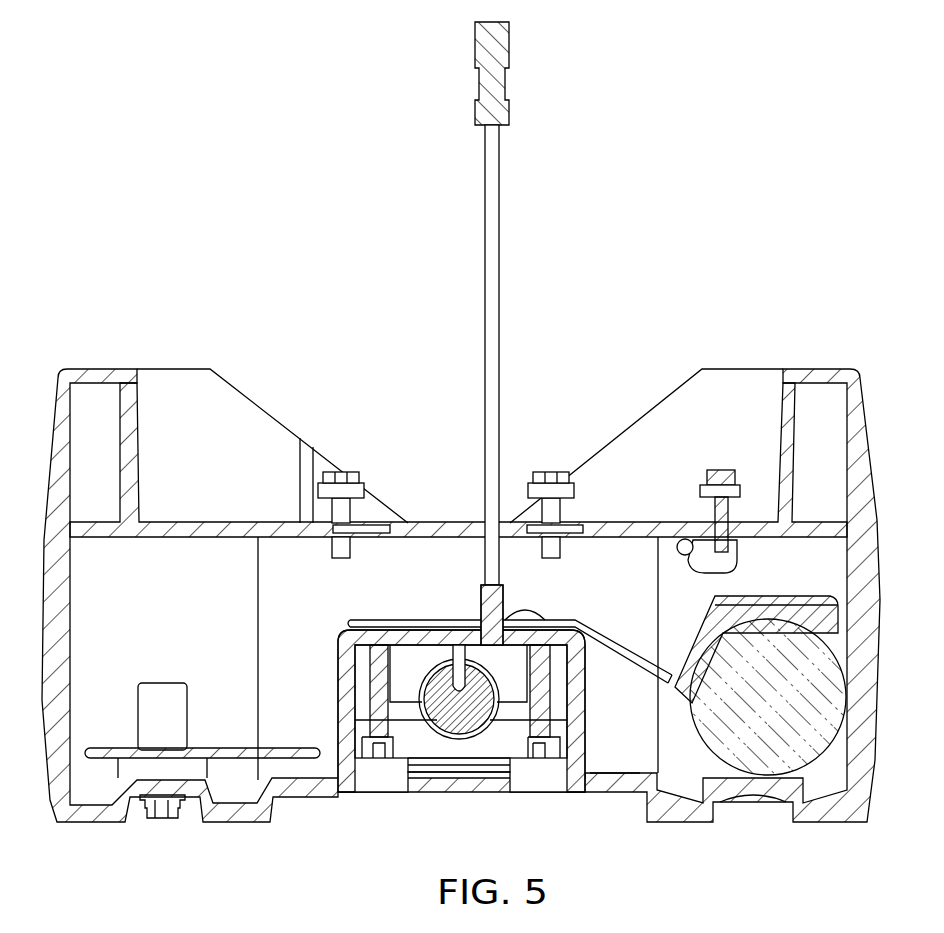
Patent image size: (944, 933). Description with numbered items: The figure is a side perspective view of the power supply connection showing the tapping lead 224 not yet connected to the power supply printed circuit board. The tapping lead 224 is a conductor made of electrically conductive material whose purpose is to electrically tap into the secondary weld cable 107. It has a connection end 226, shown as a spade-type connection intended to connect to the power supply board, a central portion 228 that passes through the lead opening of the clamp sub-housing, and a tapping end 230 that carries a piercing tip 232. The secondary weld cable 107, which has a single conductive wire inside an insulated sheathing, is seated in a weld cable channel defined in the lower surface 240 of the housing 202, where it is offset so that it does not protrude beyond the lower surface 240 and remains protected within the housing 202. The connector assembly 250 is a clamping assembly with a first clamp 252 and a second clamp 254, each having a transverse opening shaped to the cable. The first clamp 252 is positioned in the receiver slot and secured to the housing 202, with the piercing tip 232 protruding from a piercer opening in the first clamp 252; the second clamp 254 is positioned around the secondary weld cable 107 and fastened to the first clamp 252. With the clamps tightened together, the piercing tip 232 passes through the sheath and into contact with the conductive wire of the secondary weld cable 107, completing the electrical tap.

The housing 202 is at (870, 444).
The tapping lead 224 is at (483, 303).
The connection end 226 is at (510, 45).
The central portion 228 is at (485, 352).
The tapping end 230 is at (481, 606).
The piercing tip 232 is at (457, 657).
The connector assembly 250 is at (471, 720).
The first clamp 252 is at (395, 675).
The second clamp 254 is at (447, 743).
The secondary weld cable 107 is at (470, 752).
The lower surface 240 is at (608, 790).